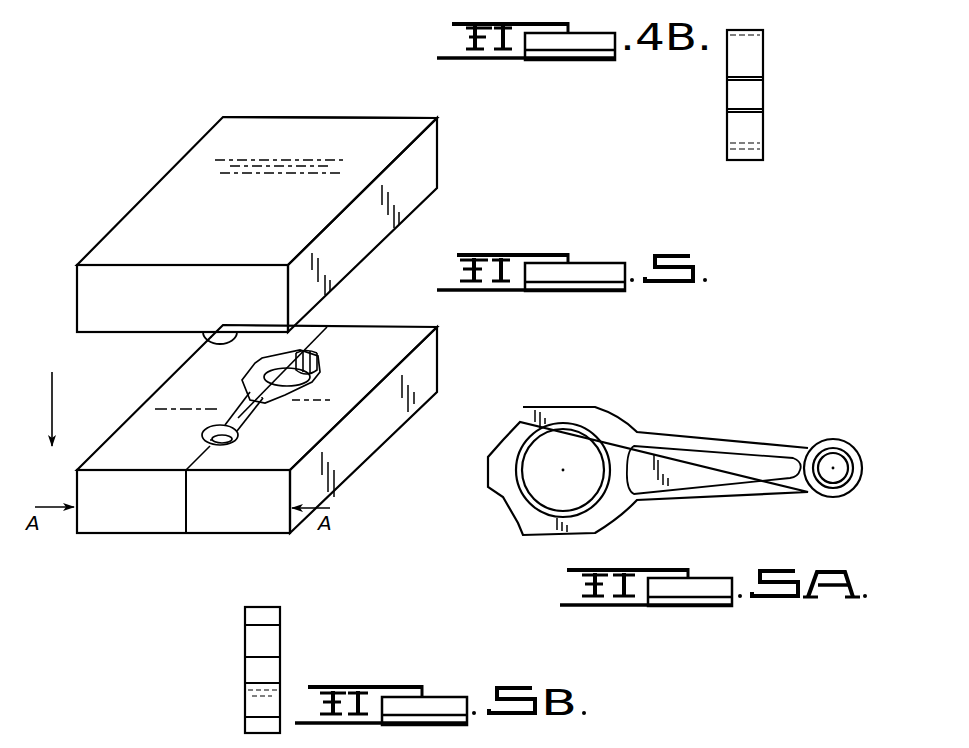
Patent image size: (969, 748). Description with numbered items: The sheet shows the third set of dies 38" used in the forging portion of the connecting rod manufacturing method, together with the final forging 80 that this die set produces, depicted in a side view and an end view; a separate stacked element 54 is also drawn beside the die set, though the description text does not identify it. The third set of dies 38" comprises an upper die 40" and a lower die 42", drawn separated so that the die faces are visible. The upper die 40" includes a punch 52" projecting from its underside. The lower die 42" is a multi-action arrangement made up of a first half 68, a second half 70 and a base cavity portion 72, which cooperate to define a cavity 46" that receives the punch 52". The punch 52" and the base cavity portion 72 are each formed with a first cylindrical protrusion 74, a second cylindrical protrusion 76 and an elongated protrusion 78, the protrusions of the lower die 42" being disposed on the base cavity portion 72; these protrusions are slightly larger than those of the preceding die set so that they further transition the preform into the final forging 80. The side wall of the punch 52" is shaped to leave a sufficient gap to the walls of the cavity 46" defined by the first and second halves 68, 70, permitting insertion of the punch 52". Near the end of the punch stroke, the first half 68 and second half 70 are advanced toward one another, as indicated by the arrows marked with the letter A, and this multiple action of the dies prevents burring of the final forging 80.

In FIG. 4B, the third set of dies 38 is at (131, 186).
In FIG. 4B, the upper die 40 is at (268, 222).
In FIG. 4B, the lower die 42 is at (353, 445).
In FIG. 4B, the cavity 46 is at (313, 361).
In FIG. 4B, the punch 52 is at (200, 335).
In FIG. 5, the billet 54 is at (712, 124).
In FIG. 4B, the first half 68 is at (128, 515).
In FIG. 4B, the second half 70 is at (228, 517).
In FIG. 4B, the base cavity portion 72 is at (262, 398).
In FIG. 4B, the first cylindrical protrusion 74 is at (314, 374).
In FIG. 4B, the second cylindrical protrusion 76 is at (205, 440).
In FIG. 4B, the elongated protrusion 78 is at (247, 407).
In FIG. 5A, the final forging 80 is at (713, 432).
In FIG. 5B, the final forging 80 is at (225, 668).